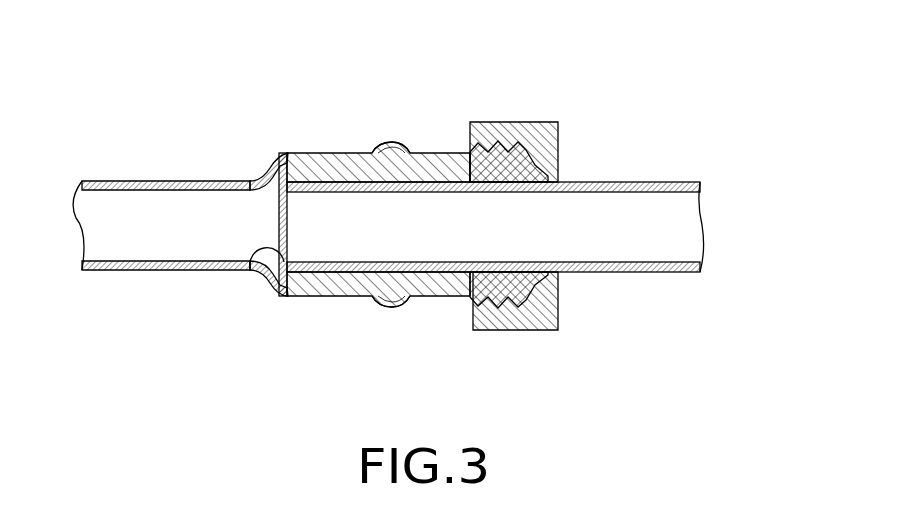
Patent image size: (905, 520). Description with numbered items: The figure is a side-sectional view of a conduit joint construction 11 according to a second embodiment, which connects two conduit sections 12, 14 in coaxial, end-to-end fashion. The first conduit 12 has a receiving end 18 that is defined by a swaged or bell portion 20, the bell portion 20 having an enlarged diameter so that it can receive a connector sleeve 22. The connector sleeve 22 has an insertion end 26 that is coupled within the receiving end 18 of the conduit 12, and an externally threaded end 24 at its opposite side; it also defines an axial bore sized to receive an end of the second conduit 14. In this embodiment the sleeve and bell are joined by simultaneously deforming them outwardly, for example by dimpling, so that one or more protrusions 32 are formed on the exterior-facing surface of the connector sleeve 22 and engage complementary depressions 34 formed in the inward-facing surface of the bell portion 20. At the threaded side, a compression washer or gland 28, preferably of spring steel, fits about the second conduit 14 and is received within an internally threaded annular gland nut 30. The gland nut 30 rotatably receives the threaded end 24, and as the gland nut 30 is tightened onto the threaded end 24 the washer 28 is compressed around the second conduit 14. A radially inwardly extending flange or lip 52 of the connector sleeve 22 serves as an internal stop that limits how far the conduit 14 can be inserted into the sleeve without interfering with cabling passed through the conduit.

The conduit joint construction 11 is at (588, 338).
The conduit 12 is at (184, 181).
The second conduit 14 is at (690, 272).
The receiving end 18 is at (433, 130).
The bell portion 20 is at (322, 153).
The connector sleeve 22 is at (302, 296).
The externally threaded end 24 is at (470, 152).
The insertion end 26 is at (287, 170).
The compression washer 28 is at (538, 170).
The gland nut 30 is at (545, 122).
The protrusions 32 is at (403, 307).
The depressions 34 is at (396, 142).
The flange or lip 52 is at (250, 268).